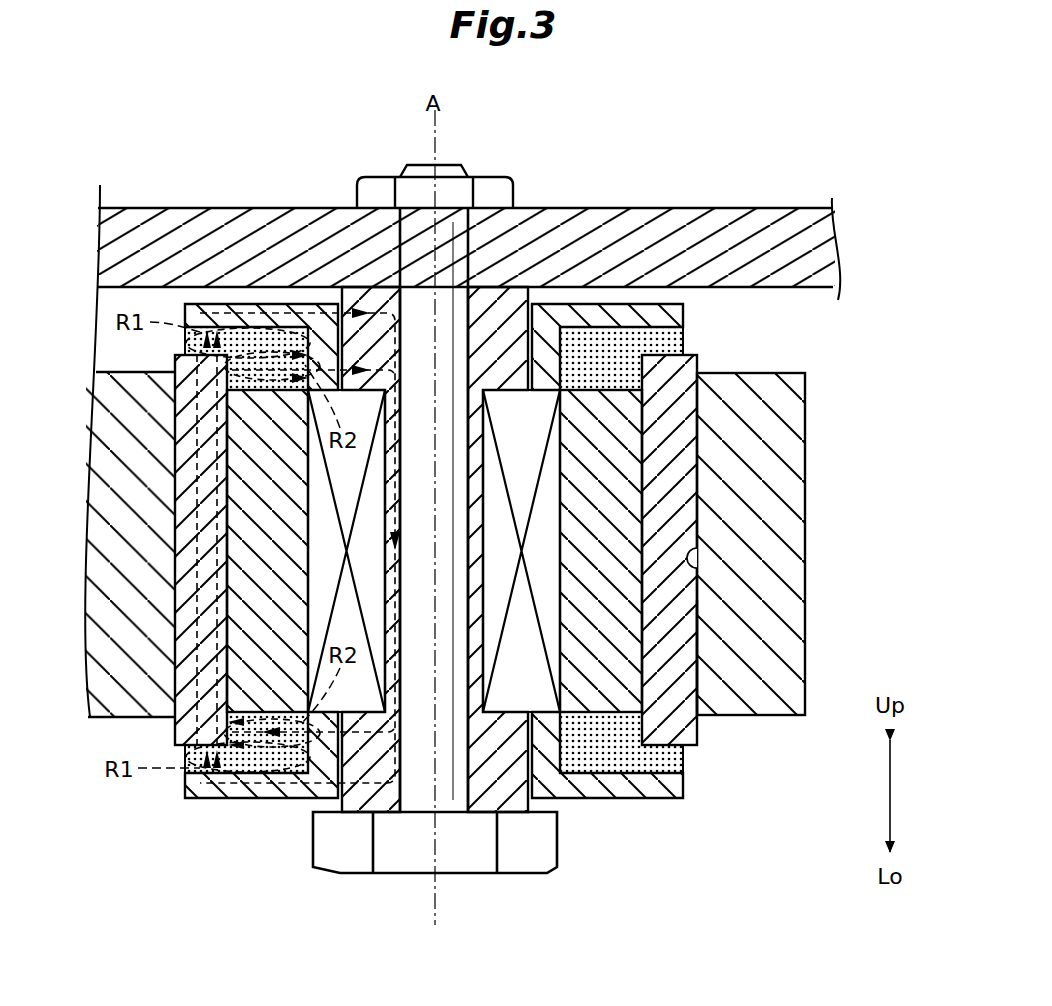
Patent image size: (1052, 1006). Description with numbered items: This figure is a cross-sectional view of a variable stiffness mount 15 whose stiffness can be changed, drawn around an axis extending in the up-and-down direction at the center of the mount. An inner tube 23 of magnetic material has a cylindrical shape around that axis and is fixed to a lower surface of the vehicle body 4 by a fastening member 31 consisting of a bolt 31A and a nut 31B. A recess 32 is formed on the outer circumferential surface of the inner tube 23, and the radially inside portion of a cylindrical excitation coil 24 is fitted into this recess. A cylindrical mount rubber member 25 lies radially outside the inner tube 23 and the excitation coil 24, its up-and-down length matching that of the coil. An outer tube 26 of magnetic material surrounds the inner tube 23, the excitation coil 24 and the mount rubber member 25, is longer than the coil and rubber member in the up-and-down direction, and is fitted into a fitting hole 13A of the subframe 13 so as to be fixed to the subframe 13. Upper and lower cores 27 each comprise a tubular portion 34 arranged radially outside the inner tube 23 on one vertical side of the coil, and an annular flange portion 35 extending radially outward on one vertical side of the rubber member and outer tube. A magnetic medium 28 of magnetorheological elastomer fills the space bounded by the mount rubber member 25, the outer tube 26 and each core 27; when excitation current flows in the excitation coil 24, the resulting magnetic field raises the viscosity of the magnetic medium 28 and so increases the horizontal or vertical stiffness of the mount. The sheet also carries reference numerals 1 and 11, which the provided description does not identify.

The mounting structure 1 is at (780, 170).
The vehicle body 4 is at (730, 208).
The housing 11 is at (196, 832).
The subframe 13 is at (805, 503).
The fitting hole 13A is at (690, 570).
The mount 15 is at (233, 817).
The inner tube 23 is at (483, 816).
The excitation coil 24 is at (550, 714).
The mount rubber member 25 is at (577, 780).
The outer tube 26 is at (698, 676).
The core 27 is at (685, 313).
The magnetic medium 28 is at (672, 342).
The fastening member 31 is at (457, 888).
The bolt 31A is at (423, 876).
The nut 31B is at (372, 178).
The recess 32 is at (488, 420).
The tubular portion 34 is at (572, 358).
The flange portion 35 is at (650, 304).